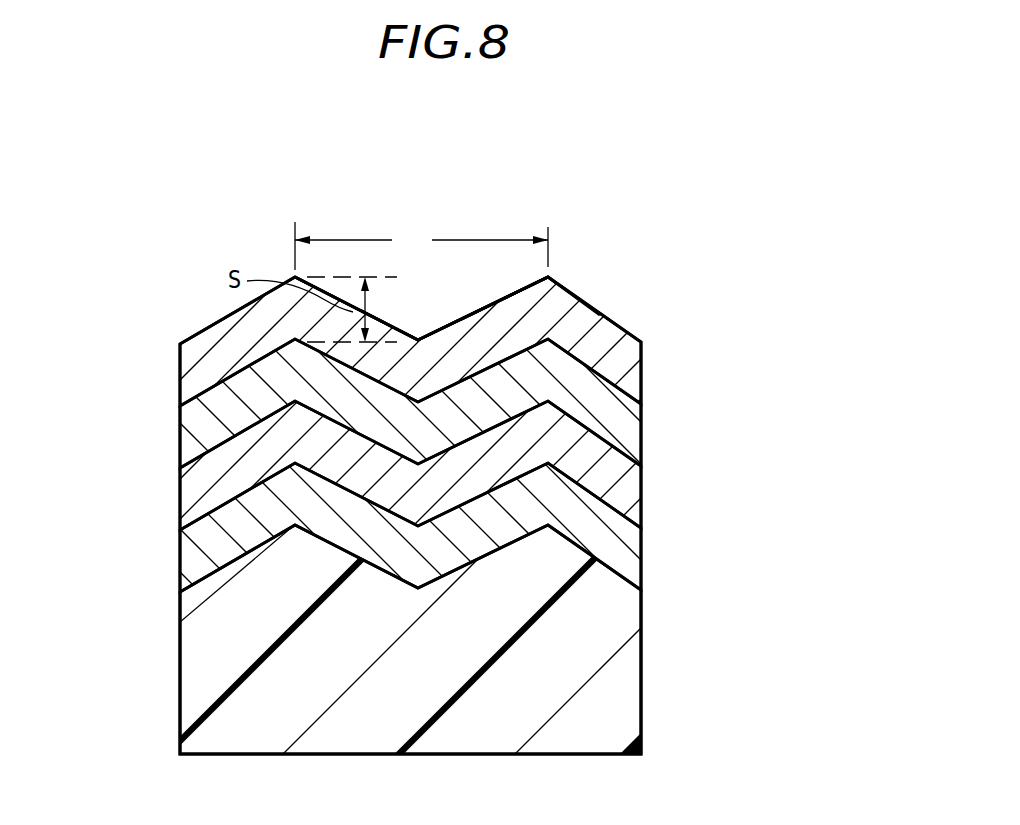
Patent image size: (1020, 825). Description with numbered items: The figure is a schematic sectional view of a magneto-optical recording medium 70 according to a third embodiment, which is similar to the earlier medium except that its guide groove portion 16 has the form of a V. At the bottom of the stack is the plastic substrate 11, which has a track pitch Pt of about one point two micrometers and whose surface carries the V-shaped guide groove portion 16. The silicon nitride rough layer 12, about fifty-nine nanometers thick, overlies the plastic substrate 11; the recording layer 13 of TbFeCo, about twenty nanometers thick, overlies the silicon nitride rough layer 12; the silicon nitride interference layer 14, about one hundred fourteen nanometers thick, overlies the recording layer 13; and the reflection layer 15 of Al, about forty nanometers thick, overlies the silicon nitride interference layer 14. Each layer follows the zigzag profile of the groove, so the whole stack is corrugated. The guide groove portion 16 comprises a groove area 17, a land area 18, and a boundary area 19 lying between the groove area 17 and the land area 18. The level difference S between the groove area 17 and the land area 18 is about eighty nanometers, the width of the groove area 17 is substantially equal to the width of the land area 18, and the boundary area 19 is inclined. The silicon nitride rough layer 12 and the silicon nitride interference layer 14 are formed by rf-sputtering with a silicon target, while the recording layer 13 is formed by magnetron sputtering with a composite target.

The magneto-optical recording medium 70 is at (197, 278).
The guide groove portion 16 is at (389, 316).
The groove area 17 is at (418, 340).
The boundary area 19 is at (503, 313).
The land area 18 is at (550, 277).
The reflection layer 15 is at (623, 362).
The silicon nitride interference layer 14 is at (623, 427).
The recording layer 13 is at (622, 493).
The silicon nitride rough layer 12 is at (618, 543).
The plastic substrate 11 is at (612, 695).